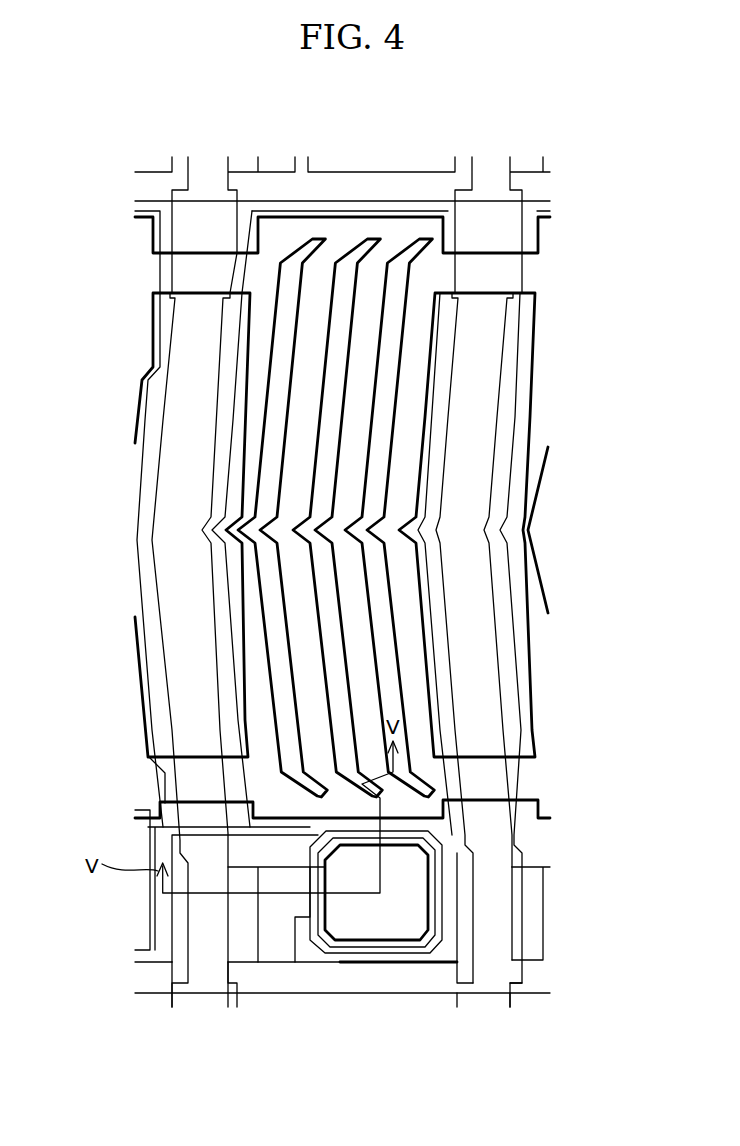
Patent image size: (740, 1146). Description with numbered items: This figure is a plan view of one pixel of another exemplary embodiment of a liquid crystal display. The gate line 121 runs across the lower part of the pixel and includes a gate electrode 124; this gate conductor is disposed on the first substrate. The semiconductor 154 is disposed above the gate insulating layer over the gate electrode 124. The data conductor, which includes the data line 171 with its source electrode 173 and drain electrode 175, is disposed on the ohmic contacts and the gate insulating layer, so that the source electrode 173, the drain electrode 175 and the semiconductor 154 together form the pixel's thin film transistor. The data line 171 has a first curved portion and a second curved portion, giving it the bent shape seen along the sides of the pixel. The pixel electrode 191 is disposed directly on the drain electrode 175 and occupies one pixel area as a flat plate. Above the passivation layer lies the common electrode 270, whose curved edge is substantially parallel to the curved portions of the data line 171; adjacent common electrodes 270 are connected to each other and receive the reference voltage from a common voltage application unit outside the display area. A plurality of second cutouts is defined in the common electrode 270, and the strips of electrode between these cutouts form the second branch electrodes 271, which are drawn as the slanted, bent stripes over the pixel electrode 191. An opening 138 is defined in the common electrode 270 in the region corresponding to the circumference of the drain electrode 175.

The gate line 121 is at (397, 963).
The gate electrode 124 is at (170, 912).
The opening 138 is at (350, 953).
The semiconductor 154 is at (245, 962).
The data line 171 is at (153, 566).
The source electrode 173 is at (230, 928).
The drain electrode 175 is at (300, 953).
The pixel electrode 191 is at (440, 413).
The common electrode 270 is at (430, 686).
The second branch electrodes 271 is at (343, 632).